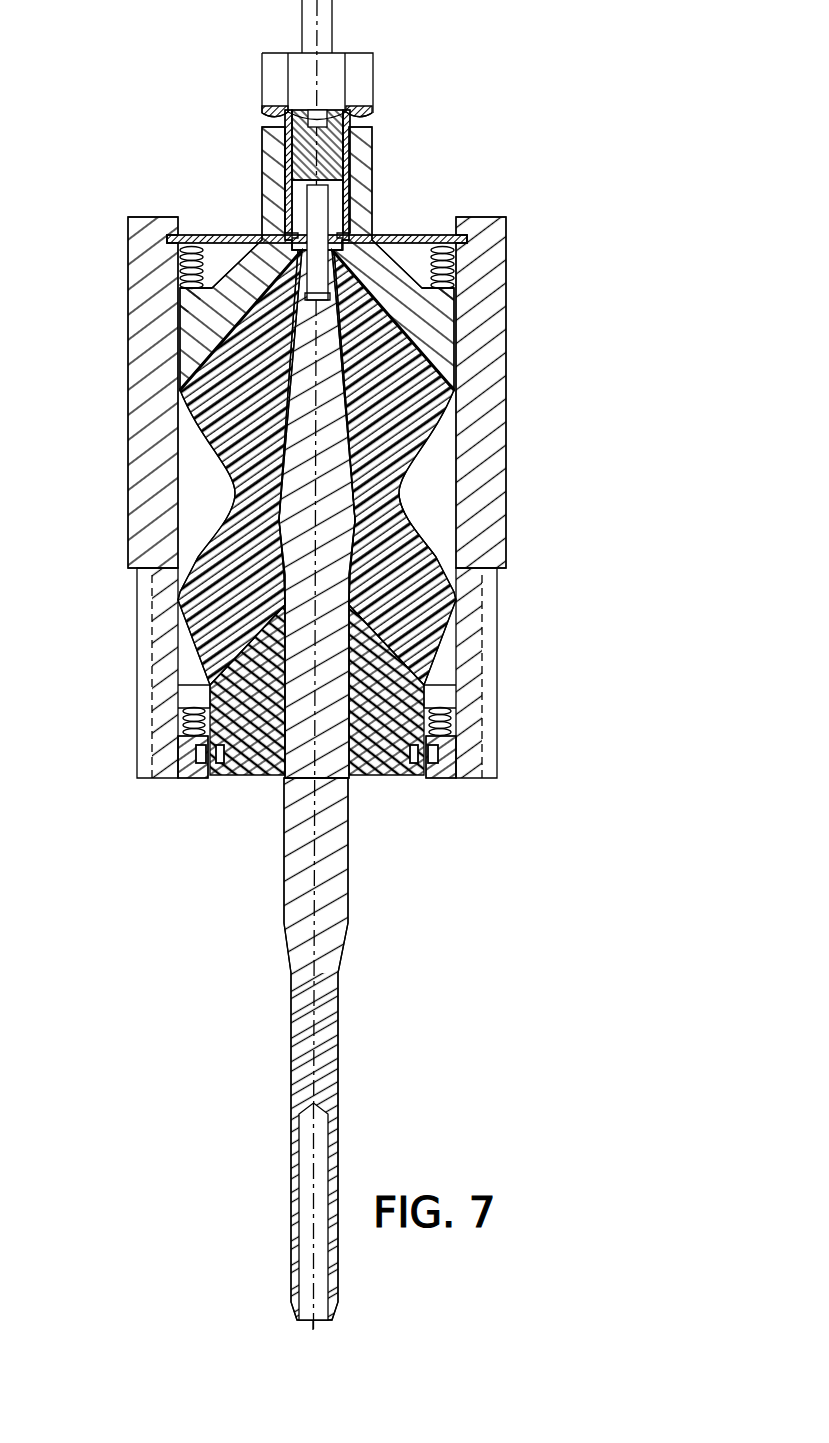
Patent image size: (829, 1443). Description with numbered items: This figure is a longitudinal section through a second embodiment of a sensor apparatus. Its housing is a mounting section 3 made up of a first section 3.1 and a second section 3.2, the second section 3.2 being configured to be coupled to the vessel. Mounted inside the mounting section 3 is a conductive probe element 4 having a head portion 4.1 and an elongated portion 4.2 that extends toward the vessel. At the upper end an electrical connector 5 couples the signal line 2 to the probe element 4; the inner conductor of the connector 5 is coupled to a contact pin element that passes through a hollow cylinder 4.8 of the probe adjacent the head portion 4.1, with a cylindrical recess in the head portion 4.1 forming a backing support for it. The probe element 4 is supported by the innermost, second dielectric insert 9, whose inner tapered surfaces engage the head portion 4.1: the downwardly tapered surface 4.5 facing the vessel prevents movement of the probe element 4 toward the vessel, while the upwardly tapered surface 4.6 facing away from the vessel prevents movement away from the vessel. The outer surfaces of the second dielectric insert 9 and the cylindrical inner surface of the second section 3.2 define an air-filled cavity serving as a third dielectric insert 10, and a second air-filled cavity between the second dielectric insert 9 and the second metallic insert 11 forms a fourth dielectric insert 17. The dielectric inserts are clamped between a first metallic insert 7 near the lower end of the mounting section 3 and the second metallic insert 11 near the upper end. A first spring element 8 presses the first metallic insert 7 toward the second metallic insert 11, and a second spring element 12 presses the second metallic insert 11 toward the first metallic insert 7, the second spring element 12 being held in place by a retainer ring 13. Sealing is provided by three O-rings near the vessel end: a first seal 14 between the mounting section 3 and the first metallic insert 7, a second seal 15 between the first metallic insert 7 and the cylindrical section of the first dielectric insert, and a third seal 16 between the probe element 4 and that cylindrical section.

The signal line 2 is at (302, 28).
The mounting section 3 is at (273, 497).
The first section 3.1 is at (146, 380).
The second section 3.2 is at (163, 660).
The probe element 4 is at (238, 778).
The head portion 4.1 is at (345, 490).
The elongated portion 4.2 is at (334, 932).
The downwardly tapered surface 4.5 is at (255, 547).
The upwardly tapered surface 4.6 is at (360, 410).
The hollow cylinder 4.8 is at (348, 233).
The electrical connector 5 is at (275, 82).
The first metallic insert 7 is at (437, 678).
The first spring element 8 is at (430, 725).
The second dielectric insert 9 is at (400, 548).
The third dielectric insert 10 is at (440, 470).
The second metallic insert 11 is at (417, 318).
The second spring element 12 is at (182, 268).
The retainer ring 13 is at (184, 234).
The first seal 14 is at (200, 750).
The second seal 15 is at (396, 764).
The third seal 16 is at (293, 712).
The fourth dielectric insert 17 is at (252, 242).